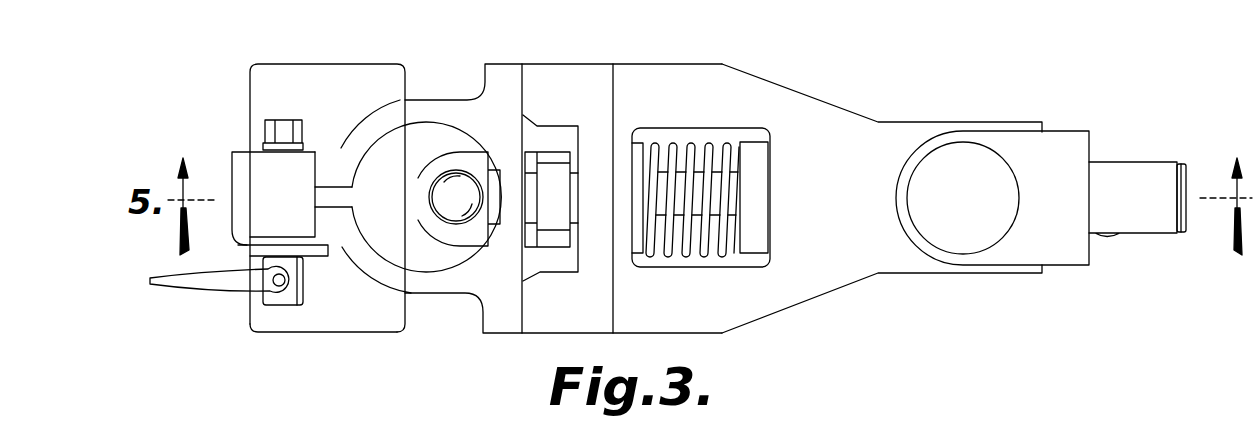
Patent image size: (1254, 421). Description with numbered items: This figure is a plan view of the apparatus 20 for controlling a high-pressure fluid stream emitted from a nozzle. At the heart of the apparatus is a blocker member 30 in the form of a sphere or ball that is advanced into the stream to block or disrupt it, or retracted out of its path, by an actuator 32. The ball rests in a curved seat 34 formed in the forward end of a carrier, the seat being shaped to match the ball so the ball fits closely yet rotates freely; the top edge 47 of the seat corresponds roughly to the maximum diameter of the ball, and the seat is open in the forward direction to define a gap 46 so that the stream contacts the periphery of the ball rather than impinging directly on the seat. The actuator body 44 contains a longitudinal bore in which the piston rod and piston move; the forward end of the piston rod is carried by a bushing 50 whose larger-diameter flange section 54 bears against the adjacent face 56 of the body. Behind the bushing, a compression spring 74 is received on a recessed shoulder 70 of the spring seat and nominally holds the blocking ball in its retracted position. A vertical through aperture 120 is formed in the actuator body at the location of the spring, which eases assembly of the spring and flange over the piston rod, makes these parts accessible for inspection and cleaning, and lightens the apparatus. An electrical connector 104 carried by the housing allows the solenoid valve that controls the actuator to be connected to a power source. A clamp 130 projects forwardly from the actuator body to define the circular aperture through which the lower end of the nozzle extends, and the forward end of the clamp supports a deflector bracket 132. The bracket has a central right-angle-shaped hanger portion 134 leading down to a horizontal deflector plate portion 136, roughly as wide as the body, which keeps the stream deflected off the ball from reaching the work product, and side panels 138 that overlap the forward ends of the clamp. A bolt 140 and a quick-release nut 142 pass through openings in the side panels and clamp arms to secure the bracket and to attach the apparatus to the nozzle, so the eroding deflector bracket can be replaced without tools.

The apparatus 20 is at (470, 32).
The blocker member 30 is at (430, 222).
The actuator 32 is at (758, 331).
The seat 34 is at (443, 215).
The actuator body 44 is at (657, 60).
The gap 46 is at (420, 193).
The top edge of the seat 47 is at (463, 155).
The bushing 50 is at (528, 125).
The flange section 54 is at (532, 157).
The adjacent face of the body 56 is at (523, 300).
The recessed shoulder 70 is at (743, 177).
The compression spring 74 is at (698, 140).
The electrical connector 104 is at (1132, 162).
The vertical through aperture 120 is at (733, 258).
The clamp 130 is at (360, 277).
The deflector bracket 132 is at (225, 162).
The hanger portion 134 is at (230, 214).
The deflector plate portion 136 is at (285, 318).
The side panels 138 is at (260, 272).
The bolt 140 is at (272, 118).
The quick-release nut 142 is at (195, 288).